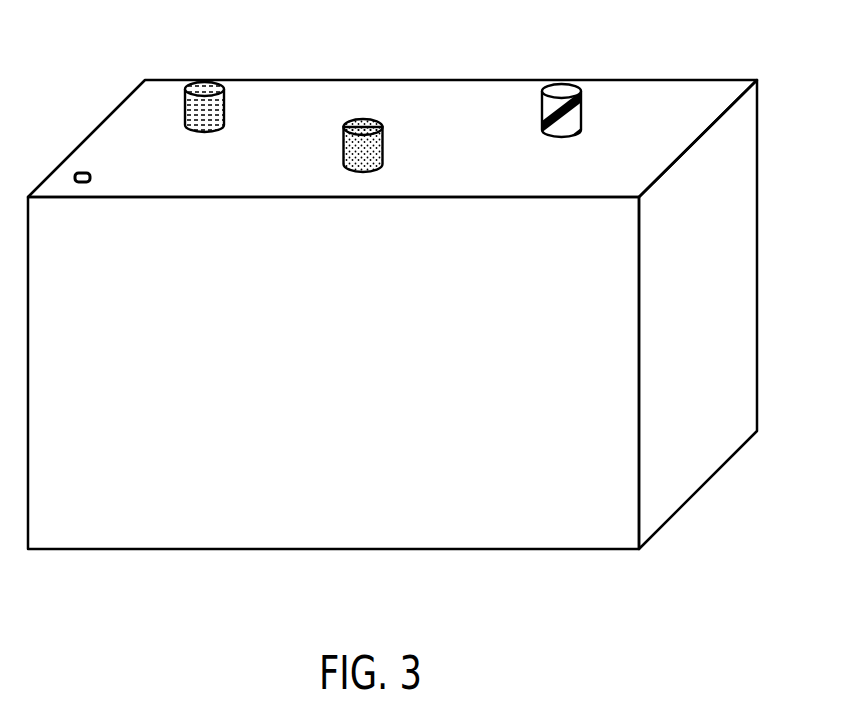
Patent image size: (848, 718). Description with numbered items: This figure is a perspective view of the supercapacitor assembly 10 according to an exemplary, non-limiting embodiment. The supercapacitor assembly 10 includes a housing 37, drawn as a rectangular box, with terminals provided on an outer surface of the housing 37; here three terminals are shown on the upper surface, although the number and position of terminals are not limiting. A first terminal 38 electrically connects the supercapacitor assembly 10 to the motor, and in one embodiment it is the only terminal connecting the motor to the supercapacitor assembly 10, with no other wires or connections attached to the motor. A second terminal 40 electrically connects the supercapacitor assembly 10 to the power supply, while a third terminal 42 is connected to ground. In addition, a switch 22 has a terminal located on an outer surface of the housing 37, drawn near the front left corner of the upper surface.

The supercapacitor assembly 10 is at (327, 80).
The switch 22 is at (75, 177).
The housing 37 is at (757, 202).
The first terminal 38 is at (217, 82).
The second terminal 40 is at (370, 119).
The third terminal 42 is at (562, 85).